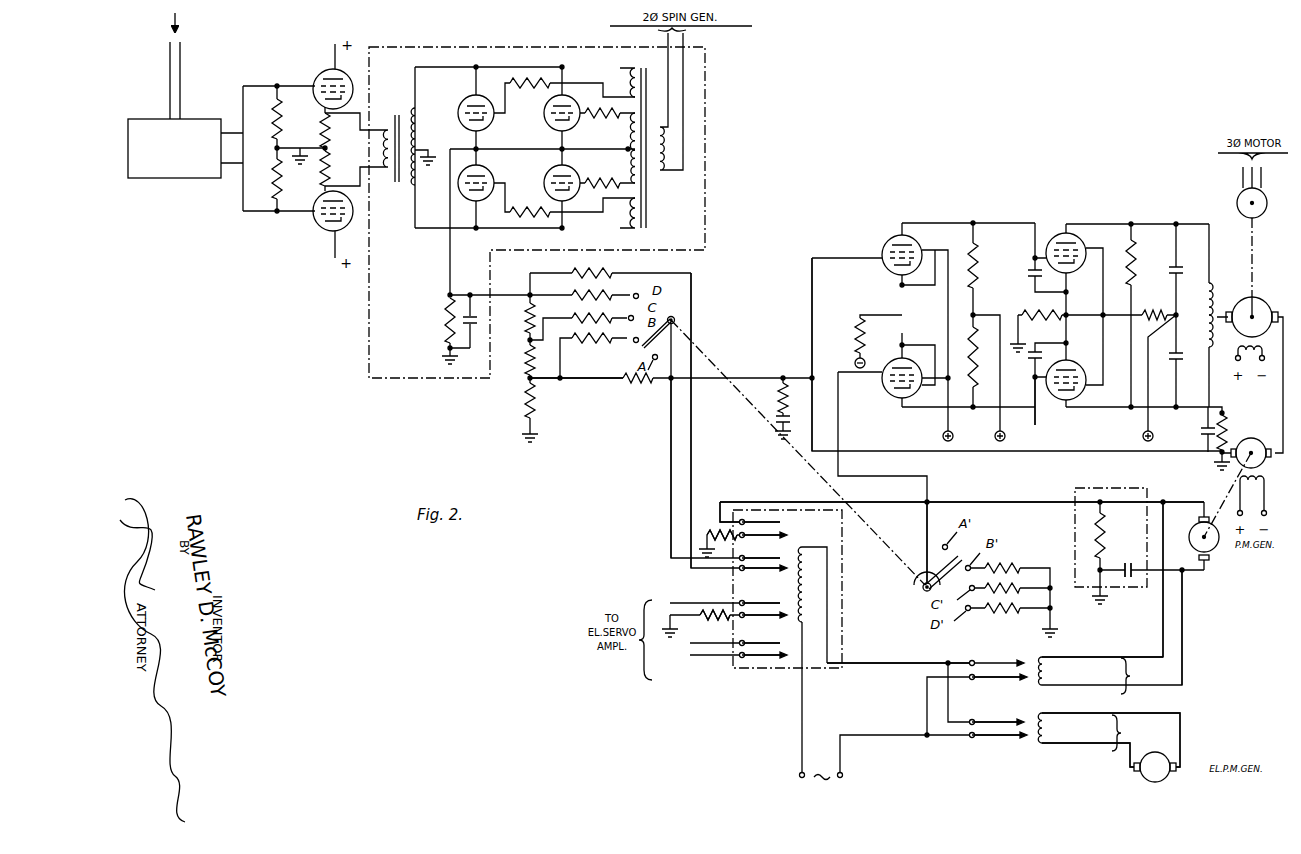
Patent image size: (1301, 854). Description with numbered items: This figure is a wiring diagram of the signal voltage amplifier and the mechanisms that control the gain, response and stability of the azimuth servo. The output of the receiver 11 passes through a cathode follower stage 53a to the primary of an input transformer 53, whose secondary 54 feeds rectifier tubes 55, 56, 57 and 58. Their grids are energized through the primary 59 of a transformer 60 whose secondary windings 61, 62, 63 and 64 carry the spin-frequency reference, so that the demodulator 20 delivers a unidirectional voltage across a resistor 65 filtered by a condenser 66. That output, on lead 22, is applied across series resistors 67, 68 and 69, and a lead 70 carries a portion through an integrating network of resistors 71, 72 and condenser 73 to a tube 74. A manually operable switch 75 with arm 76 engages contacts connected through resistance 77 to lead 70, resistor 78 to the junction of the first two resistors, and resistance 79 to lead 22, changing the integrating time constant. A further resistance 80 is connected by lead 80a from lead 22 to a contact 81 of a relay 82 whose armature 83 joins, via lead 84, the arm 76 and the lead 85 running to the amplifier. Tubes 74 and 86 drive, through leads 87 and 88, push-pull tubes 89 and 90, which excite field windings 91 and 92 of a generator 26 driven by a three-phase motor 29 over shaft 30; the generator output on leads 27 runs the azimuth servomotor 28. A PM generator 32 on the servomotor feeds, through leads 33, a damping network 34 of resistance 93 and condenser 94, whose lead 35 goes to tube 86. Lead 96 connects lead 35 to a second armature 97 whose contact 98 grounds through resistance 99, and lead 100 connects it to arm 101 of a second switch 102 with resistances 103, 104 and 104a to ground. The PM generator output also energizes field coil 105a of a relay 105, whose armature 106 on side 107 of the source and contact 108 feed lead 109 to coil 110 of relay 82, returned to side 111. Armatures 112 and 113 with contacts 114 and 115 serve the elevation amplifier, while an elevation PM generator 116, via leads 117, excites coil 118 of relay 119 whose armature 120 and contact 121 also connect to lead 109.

The receiver 11 is at (174, 178).
The demodulator 20 is at (474, 47).
The lead 22 is at (505, 292).
The generator 26 is at (1256, 298).
The leads 27 is at (1246, 380).
The azimuth servomotor 28 is at (1251, 438).
The three-phase motor 29 is at (1234, 200).
The shaft 30 is at (1250, 257).
The PM generator 32 is at (1220, 549).
The leads 33 is at (1164, 502).
The damping network 34 is at (1098, 486).
The lead 35 is at (932, 494).
The input transformer 53 is at (399, 190).
The cathode follower stage 53a is at (310, 215).
The secondary 54 is at (413, 108).
The rectifier tube 55 is at (461, 103).
The rectifier tube 56 is at (547, 116).
The rectifier tube 57 is at (546, 174).
The rectifier tube 58 is at (476, 199).
The primary 59 is at (670, 154).
The transformer 60 is at (650, 212).
The winding 61 is at (620, 68).
The winding 62 is at (625, 137).
The winding 63 is at (625, 168).
The winding 64 is at (624, 220).
The resistor 65 is at (445, 325).
The filtering condenser 66 is at (477, 326).
The resistor 67 is at (527, 321).
The resistor 68 is at (527, 367).
The resistor 69 is at (527, 407).
The lead 70 is at (585, 382).
The resistor 71 is at (644, 384).
The resistor 72 is at (780, 398).
The condenser 73 is at (776, 422).
The tube 74 is at (882, 247).
The manually operable switch 75 is at (680, 301).
The arm 76 is at (682, 334).
The resistance 77 is at (592, 345).
The resistor 78 is at (595, 316).
The resistance 79 is at (602, 293).
The resistance 80 is at (600, 271).
The lead 80a is at (692, 465).
The contact 81 is at (782, 570).
The gain and response control relay 82 is at (740, 673).
The armature 83 is at (762, 558).
The lead 84 is at (668, 465).
The lead 85 is at (810, 377).
The tube 86 is at (888, 395).
The lead 87 is at (1000, 223).
The lead 88 is at (1030, 408).
The tube 89 is at (1056, 234).
The tube 90 is at (1058, 398).
The field winding 91 is at (1214, 288).
The field winding 92 is at (1212, 346).
The resistance 93 is at (1095, 527).
The condenser 94 is at (1128, 562).
The lead 96 is at (730, 507).
The second armature 97 is at (755, 520).
The contact 98 is at (780, 533).
The resistance 99 is at (712, 532).
The lead 100 is at (924, 534).
The arm 101 is at (916, 588).
The second manually operable switch 102 is at (880, 630).
The resistance 103 is at (1020, 565).
The resistance 104 is at (1030, 576).
The resistor 104a is at (1008, 611).
The relay 105 is at (1028, 660).
The field coil 105a is at (1050, 672).
The armature 106 is at (990, 690).
The one side of current source 107 is at (846, 775).
The contact 108 is at (1000, 680).
The lead 109 is at (917, 663).
The coil 110 is at (807, 578).
The other side of current source 111 is at (799, 775).
The armature 112 is at (740, 602).
The armature 113 is at (788, 658).
The contact 114 is at (780, 615).
The contact 115 is at (768, 660).
The PM generator 116 is at (1152, 780).
The leads 117 is at (1111, 740).
The coil 118 is at (1062, 727).
The relay 119 is at (1027, 750).
The armature 120 is at (985, 745).
The relay contact 121 is at (995, 738).